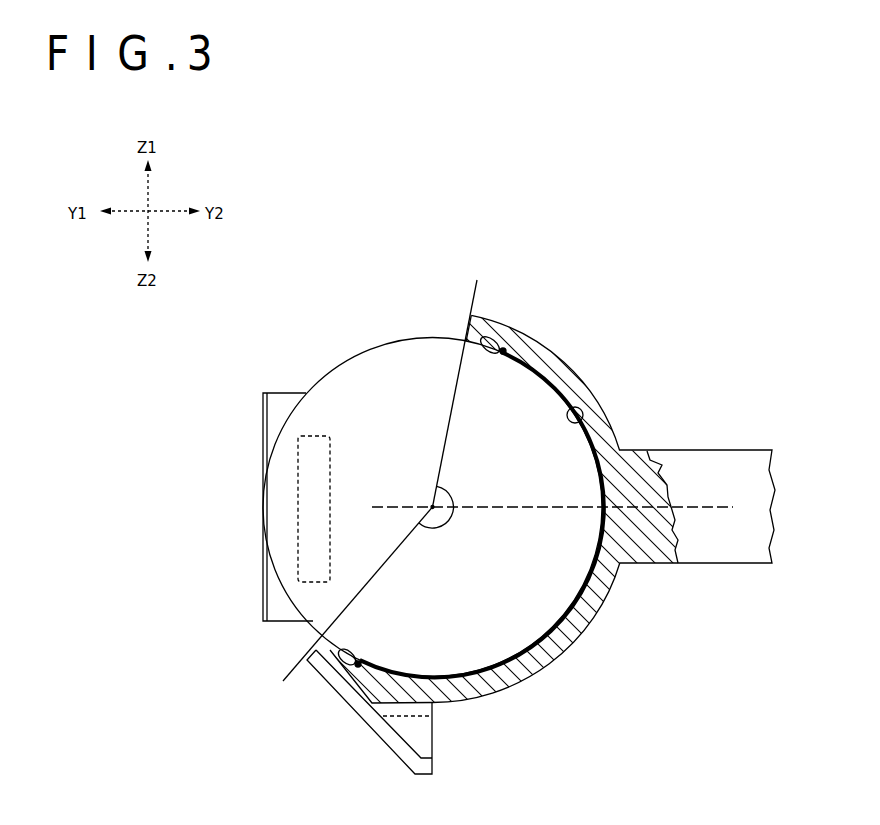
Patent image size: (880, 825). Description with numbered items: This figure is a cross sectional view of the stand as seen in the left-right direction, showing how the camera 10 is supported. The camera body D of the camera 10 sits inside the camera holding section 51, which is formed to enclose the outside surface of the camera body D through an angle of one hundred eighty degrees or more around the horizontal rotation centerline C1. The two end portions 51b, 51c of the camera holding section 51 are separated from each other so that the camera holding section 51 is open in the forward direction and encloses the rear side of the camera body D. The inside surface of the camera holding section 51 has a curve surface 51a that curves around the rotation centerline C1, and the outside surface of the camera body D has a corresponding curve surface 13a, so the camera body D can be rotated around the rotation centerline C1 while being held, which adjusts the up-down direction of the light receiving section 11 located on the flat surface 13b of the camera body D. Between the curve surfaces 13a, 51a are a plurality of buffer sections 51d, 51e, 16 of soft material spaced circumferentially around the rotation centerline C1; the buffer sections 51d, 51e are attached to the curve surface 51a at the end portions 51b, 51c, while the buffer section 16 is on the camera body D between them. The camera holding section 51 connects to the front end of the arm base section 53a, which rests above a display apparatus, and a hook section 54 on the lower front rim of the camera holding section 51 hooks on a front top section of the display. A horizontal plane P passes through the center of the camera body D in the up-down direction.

The camera 10 is at (288, 327).
The camera body D is at (385, 343).
The light receiving section 11 is at (320, 435).
The curve surface 13a is at (550, 382).
The flat surface 13b is at (263, 590).
The buffer section 16 is at (597, 572).
The camera holding section 51 is at (550, 663).
The curve surface 51a is at (583, 410).
The one end portion 51b is at (474, 317).
The other end portion 51c is at (328, 655).
The buffer section 51d is at (497, 340).
The buffer section 51e is at (346, 665).
The arm base section 53a is at (701, 463).
The hook section 54 is at (378, 728).
The horizontal plane P is at (560, 511).
The rotation centerline C1 is at (433, 513).